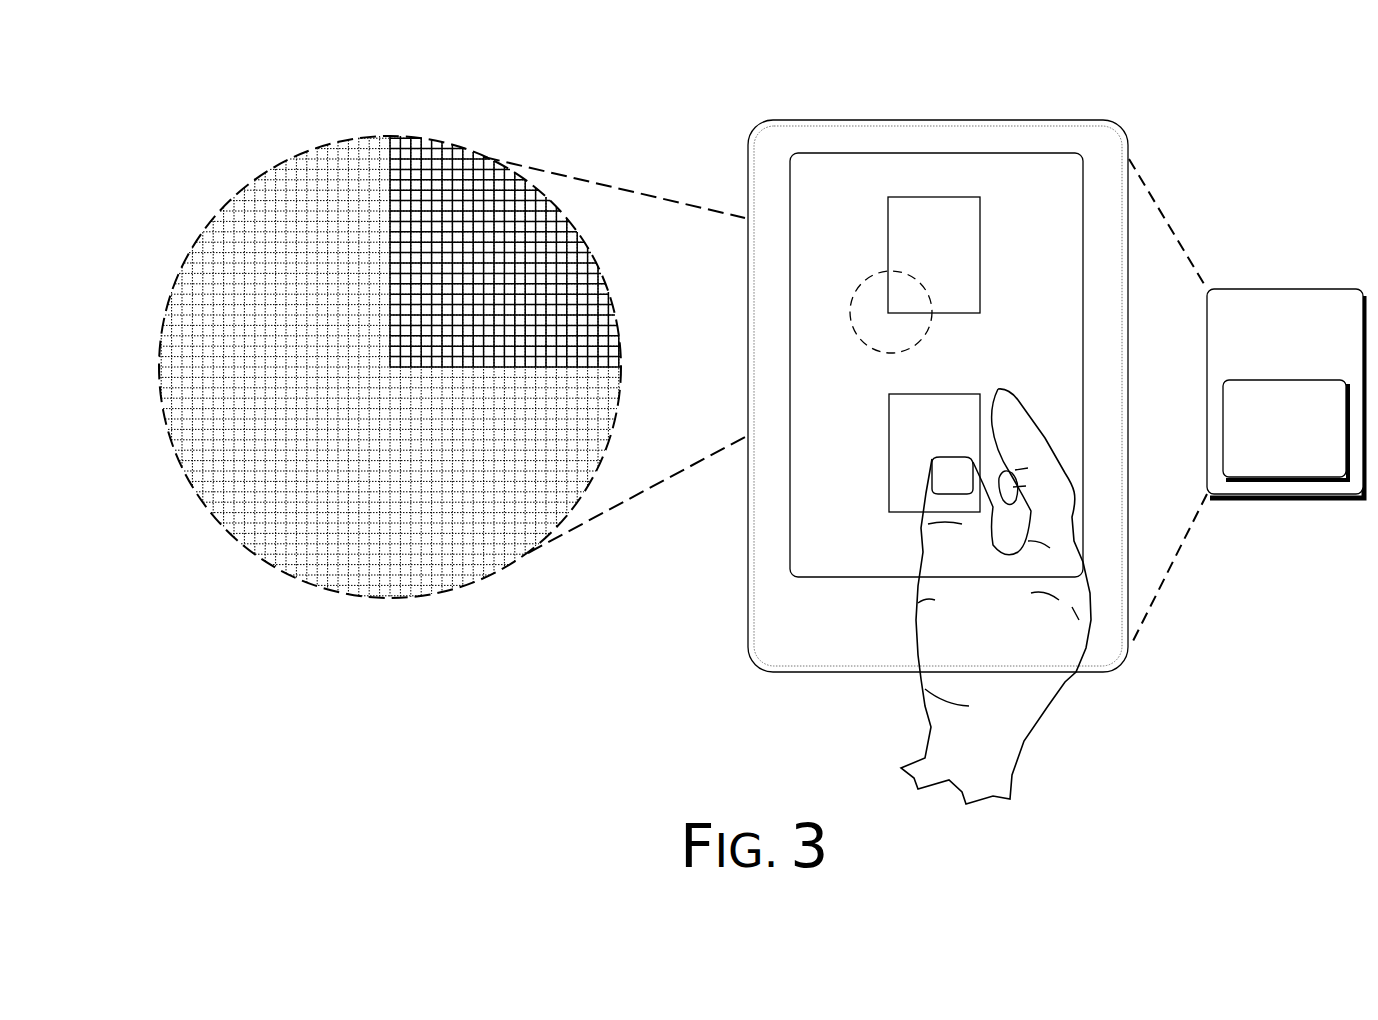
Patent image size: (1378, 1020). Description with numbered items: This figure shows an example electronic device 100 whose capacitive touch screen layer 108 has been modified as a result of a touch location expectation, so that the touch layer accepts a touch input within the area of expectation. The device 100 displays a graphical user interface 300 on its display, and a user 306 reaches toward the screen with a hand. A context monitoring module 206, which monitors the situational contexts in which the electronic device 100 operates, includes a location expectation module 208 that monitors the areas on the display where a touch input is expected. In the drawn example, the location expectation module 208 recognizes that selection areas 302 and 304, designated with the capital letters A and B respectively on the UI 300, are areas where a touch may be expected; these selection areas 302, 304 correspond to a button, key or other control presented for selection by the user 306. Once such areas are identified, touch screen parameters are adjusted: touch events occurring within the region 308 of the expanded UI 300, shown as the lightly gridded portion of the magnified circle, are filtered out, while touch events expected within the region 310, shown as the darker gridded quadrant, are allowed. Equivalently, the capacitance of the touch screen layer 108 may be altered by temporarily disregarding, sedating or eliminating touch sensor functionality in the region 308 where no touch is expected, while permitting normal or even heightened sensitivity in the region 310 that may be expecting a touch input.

The electronic device 100 is at (938, 380).
The touch screen layer 108 is at (390, 137).
The context monitoring module 206 is at (1246, 402).
The location expectation module 208 is at (1285, 430).
The graphical user interface 300 is at (1065, 153).
The selection area 302 is at (888, 197).
The selection area 304 is at (890, 490).
The user 306 is at (1035, 710).
The region 308 is at (312, 542).
The region 310 is at (452, 187).